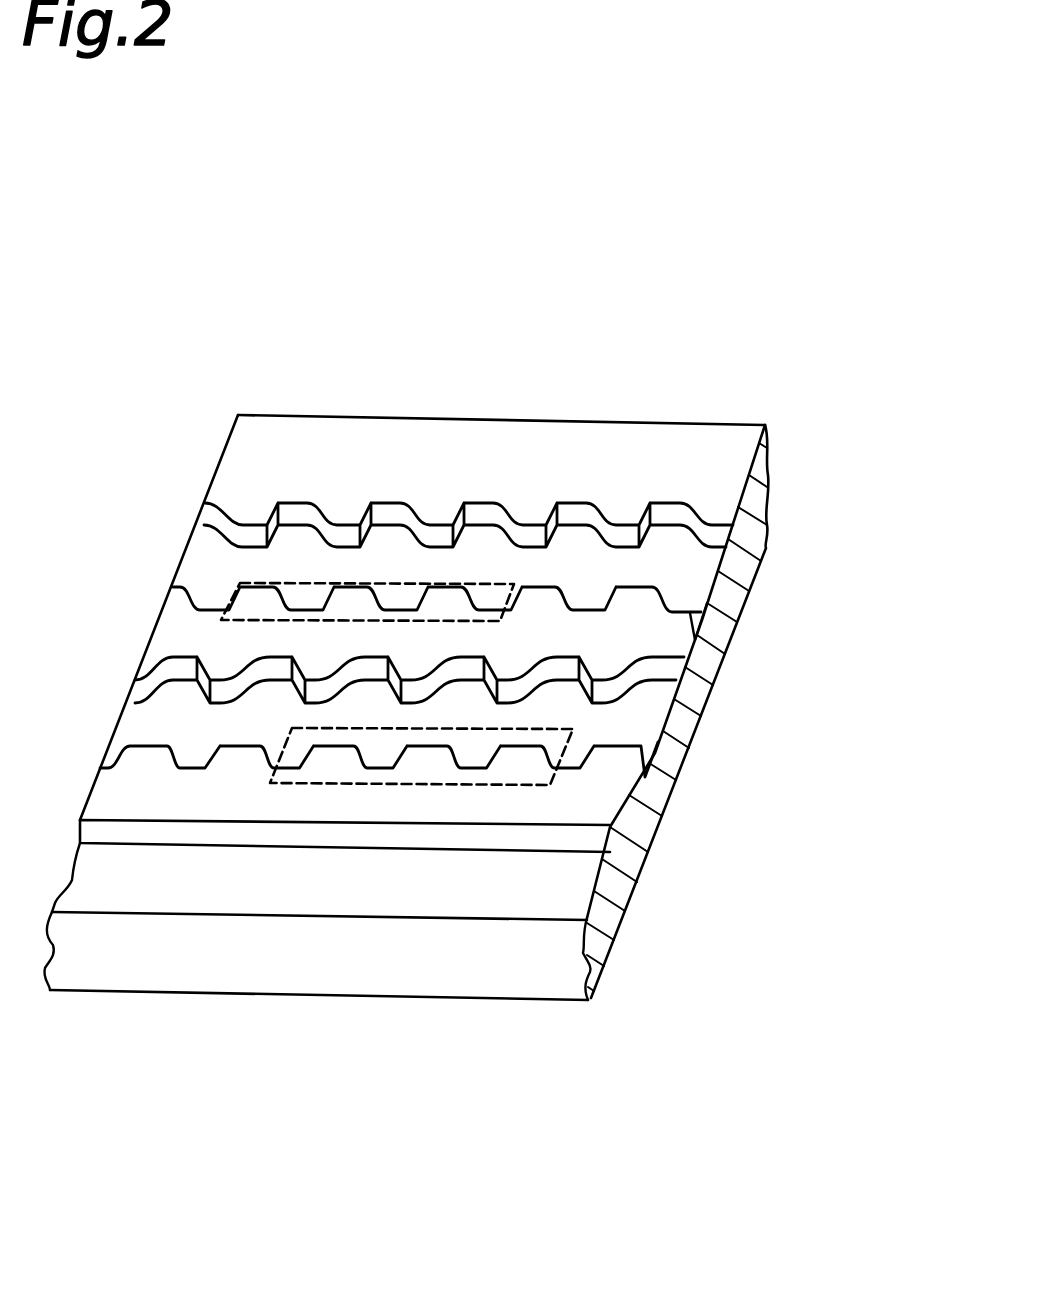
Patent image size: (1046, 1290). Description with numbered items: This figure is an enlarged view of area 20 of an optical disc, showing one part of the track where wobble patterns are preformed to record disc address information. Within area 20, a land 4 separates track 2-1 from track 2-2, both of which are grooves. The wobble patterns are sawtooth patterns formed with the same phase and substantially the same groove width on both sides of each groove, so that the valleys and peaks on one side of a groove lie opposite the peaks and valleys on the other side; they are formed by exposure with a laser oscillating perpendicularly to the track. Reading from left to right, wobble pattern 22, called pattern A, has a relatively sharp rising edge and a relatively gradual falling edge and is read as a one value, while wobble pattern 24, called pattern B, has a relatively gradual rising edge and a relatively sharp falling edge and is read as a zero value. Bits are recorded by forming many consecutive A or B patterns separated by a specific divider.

The area 20 is at (370, 317).
The wobble pattern 22 is at (393, 583).
The wobble pattern 24 is at (412, 785).
The track 2-1 is at (583, 573).
The track 2-2 is at (622, 723).
The land 4 is at (623, 632).